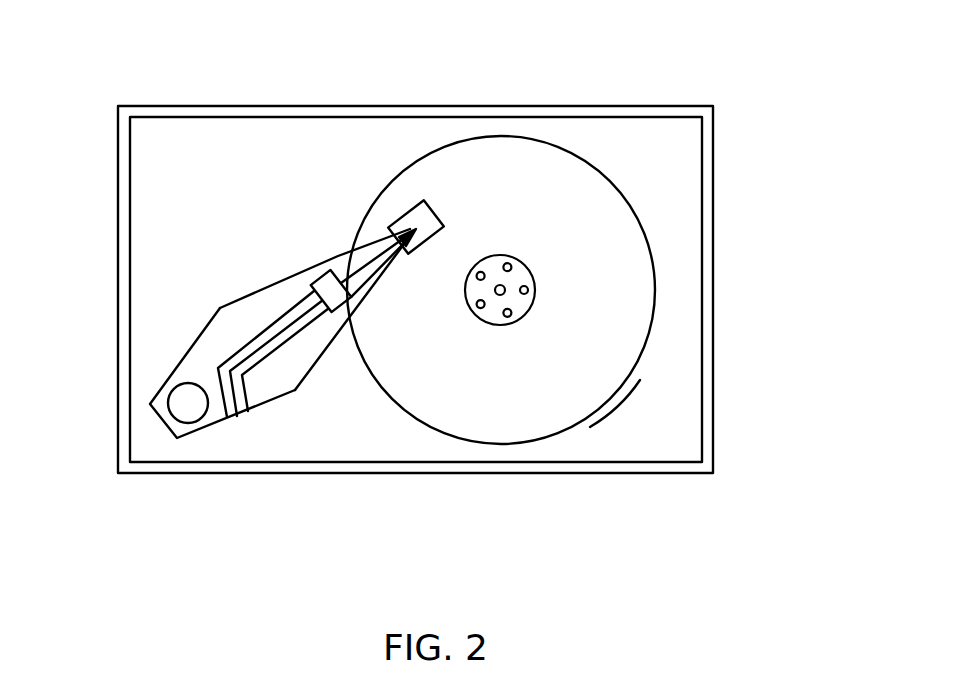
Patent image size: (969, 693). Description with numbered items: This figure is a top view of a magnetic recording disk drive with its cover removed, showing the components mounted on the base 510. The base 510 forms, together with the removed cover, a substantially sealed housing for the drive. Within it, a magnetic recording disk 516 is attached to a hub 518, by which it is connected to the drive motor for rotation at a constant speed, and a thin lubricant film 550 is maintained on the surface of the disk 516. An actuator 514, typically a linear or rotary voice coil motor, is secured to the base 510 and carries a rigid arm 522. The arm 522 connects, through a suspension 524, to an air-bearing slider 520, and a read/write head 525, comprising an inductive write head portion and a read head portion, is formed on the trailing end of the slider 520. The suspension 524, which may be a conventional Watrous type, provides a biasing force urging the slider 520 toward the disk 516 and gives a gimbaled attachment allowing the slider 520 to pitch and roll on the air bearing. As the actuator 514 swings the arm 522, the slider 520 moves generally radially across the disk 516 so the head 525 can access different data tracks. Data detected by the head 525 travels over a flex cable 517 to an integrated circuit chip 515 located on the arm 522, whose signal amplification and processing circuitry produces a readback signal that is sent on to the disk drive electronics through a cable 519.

The base 510 is at (713, 165).
The thin lubricant film 550 is at (572, 186).
The magnetic recording disk 516 is at (620, 387).
The hub 518 is at (523, 277).
The air-bearing slider 520 is at (413, 222).
The rigid arm 522 is at (214, 338).
The actuator 514 is at (183, 397).
The integrated circuit chip 515 is at (314, 287).
The flex cable 517 is at (338, 257).
The cable 519 is at (253, 357).
The suspension 524 is at (366, 280).
The read/write head 525 is at (407, 248).